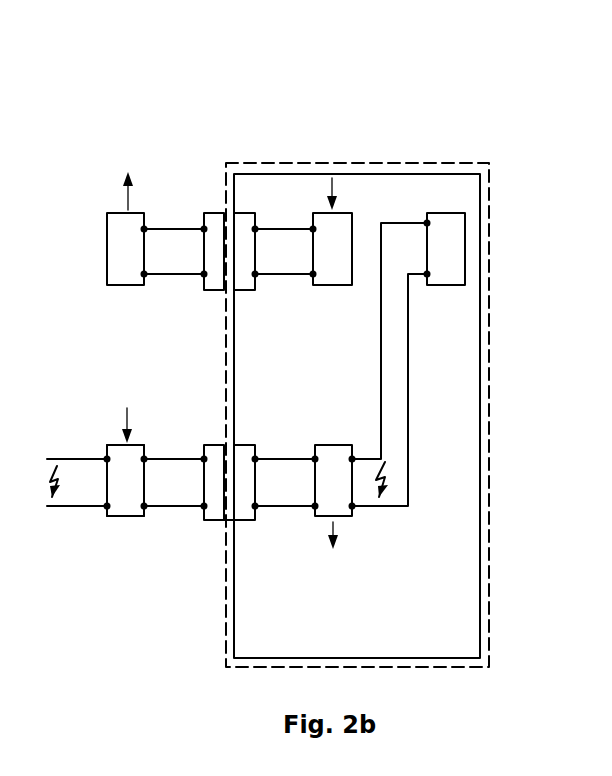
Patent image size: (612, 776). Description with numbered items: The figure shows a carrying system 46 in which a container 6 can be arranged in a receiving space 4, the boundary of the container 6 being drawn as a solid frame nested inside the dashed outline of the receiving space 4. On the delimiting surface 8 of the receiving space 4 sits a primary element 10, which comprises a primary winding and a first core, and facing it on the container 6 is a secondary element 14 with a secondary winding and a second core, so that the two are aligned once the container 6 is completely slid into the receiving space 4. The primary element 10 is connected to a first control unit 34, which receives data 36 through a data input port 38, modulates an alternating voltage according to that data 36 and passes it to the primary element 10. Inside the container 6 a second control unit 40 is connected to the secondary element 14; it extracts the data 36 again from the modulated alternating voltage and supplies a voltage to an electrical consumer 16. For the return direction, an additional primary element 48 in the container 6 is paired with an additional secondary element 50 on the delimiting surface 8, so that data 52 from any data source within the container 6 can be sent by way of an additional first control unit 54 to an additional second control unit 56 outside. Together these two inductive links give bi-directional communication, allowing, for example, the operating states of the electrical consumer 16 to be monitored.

The receiving space 4 is at (228, 660).
The container 6 is at (468, 612).
The delimiting surface 8 is at (231, 521).
The primary element 10 is at (216, 450).
The secondary element 14 is at (244, 452).
The electrical consumer 16 is at (458, 234).
The first control unit 34 is at (122, 512).
The data 36 is at (126, 410).
The data input port 38 is at (126, 446).
The second control unit 40 is at (334, 510).
The carrying system 46 is at (151, 112).
The additional primary element 48 is at (243, 220).
The additional secondary element 50 is at (216, 220).
The data 52 is at (125, 197).
The additional first control unit 54 is at (333, 273).
The additional second control unit 56 is at (115, 262).